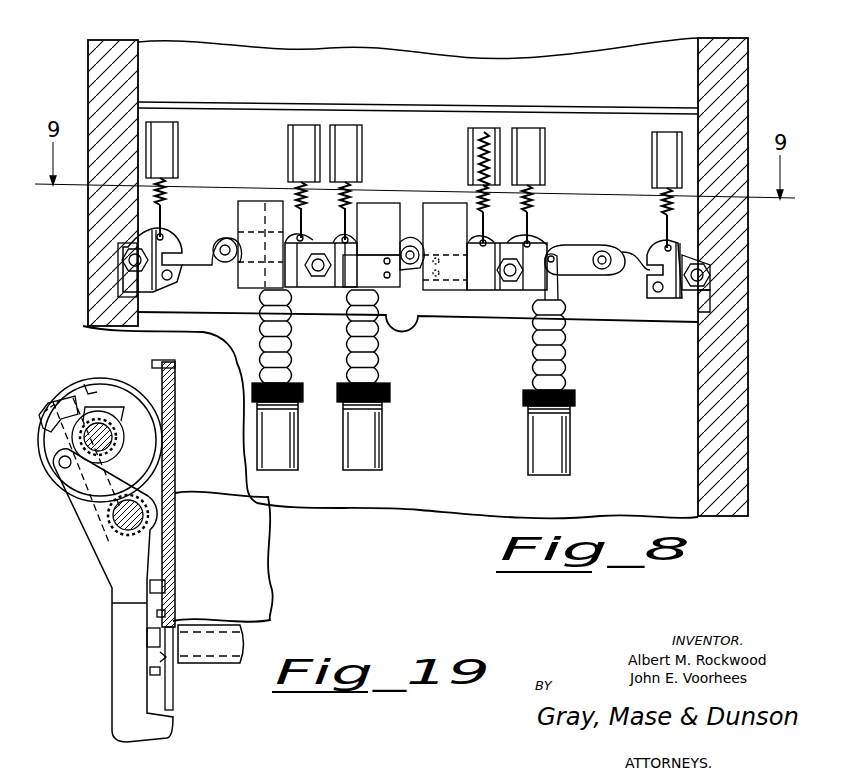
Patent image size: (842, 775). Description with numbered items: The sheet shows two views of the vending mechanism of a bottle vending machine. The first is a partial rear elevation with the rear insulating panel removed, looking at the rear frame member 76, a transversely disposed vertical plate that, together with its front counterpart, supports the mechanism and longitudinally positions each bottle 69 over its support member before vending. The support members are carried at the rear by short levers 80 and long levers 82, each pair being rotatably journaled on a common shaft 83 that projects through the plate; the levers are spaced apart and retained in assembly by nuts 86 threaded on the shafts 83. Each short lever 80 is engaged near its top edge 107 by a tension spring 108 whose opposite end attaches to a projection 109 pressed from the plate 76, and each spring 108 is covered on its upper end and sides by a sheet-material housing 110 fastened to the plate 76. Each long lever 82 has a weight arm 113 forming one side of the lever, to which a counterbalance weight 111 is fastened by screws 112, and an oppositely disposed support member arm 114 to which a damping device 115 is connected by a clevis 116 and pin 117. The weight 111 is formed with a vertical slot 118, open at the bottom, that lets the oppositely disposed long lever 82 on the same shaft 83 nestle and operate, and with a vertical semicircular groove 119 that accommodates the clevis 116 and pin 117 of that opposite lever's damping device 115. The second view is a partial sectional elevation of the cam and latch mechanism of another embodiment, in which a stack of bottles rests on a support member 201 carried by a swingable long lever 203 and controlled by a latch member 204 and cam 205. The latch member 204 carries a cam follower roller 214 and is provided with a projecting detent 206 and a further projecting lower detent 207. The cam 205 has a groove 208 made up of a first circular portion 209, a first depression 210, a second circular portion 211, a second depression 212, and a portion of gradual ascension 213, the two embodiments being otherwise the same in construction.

In FIG. 8, the rear frame member 76 is at (243, 102).
In FIG. 8, the short lever 80 is at (153, 276).
In FIG. 8, the long lever 82 is at (407, 244).
In FIG. 8, the shaft 83 is at (318, 277).
In FIG. 8, the nut 86 is at (690, 291).
In FIG. 8, the top edge 107 is at (183, 233).
In FIG. 8, the tension spring 108 is at (165, 196).
In FIG. 8, the projection 109 is at (481, 134).
In FIG. 8, the housing 110 is at (168, 122).
In FIG. 8, the counterbalance weight 111 is at (445, 217).
In FIG. 8, the screw 112 is at (386, 266).
In FIG. 8, the weight arm 113 is at (363, 272).
In FIG. 8, the support member arm 114 is at (232, 259).
In FIG. 8, the damping device 115 is at (346, 470).
In FIG. 8, the clevis 116 is at (555, 281).
In FIG. 8, the pin 117 is at (556, 265).
In FIG. 8, the vertical slot 118 is at (252, 231).
In FIG. 8, the vertical semicircular groove 119 is at (263, 201).
In FIG. 19, the bottle 69 is at (266, 543).
In FIG. 19, the support member 201 is at (178, 660).
In FIG. 19, the long lever 203 is at (148, 641).
In FIG. 19, the latch member 204 is at (90, 541).
In FIG. 19, the cam 205 is at (78, 378).
In FIG. 19, the projecting detent 206 is at (160, 657).
In FIG. 19, the lower detent 207 is at (174, 724).
In FIG. 19, the groove 208 is at (146, 444).
In FIG. 19, the first circular portion 209 is at (136, 468).
In FIG. 19, the first depression 210 is at (58, 401).
In FIG. 19, the second circular portion 211 is at (74, 403).
In FIG. 19, the second depression 212 is at (90, 389).
In FIG. 19, the portion of gradual ascension 213 is at (111, 410).
In FIG. 19, the cam follower roller 214 is at (60, 472).